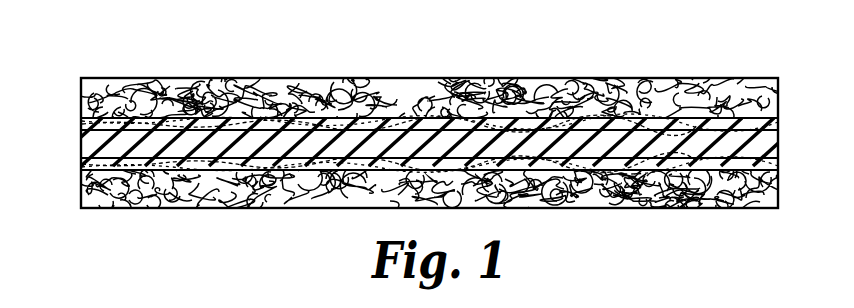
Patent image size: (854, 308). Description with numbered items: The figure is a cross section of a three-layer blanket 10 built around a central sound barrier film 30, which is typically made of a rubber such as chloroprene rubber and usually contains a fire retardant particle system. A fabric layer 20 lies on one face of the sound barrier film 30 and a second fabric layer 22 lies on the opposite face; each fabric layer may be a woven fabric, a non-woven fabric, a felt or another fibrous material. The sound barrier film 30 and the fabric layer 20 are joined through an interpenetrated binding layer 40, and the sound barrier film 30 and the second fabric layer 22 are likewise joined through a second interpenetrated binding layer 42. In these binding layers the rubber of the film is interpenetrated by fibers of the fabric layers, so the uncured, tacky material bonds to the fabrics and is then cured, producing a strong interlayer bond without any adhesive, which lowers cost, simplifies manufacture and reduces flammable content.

The blanket 10 is at (745, 55).
The fabric layer 20 is at (475, 87).
The second fabric layer 22 is at (626, 173).
The sound barrier film 30 is at (756, 140).
The interpenetrated binding layer 40 is at (80, 130).
The second interpenetrated binding layer 42 is at (80, 157).